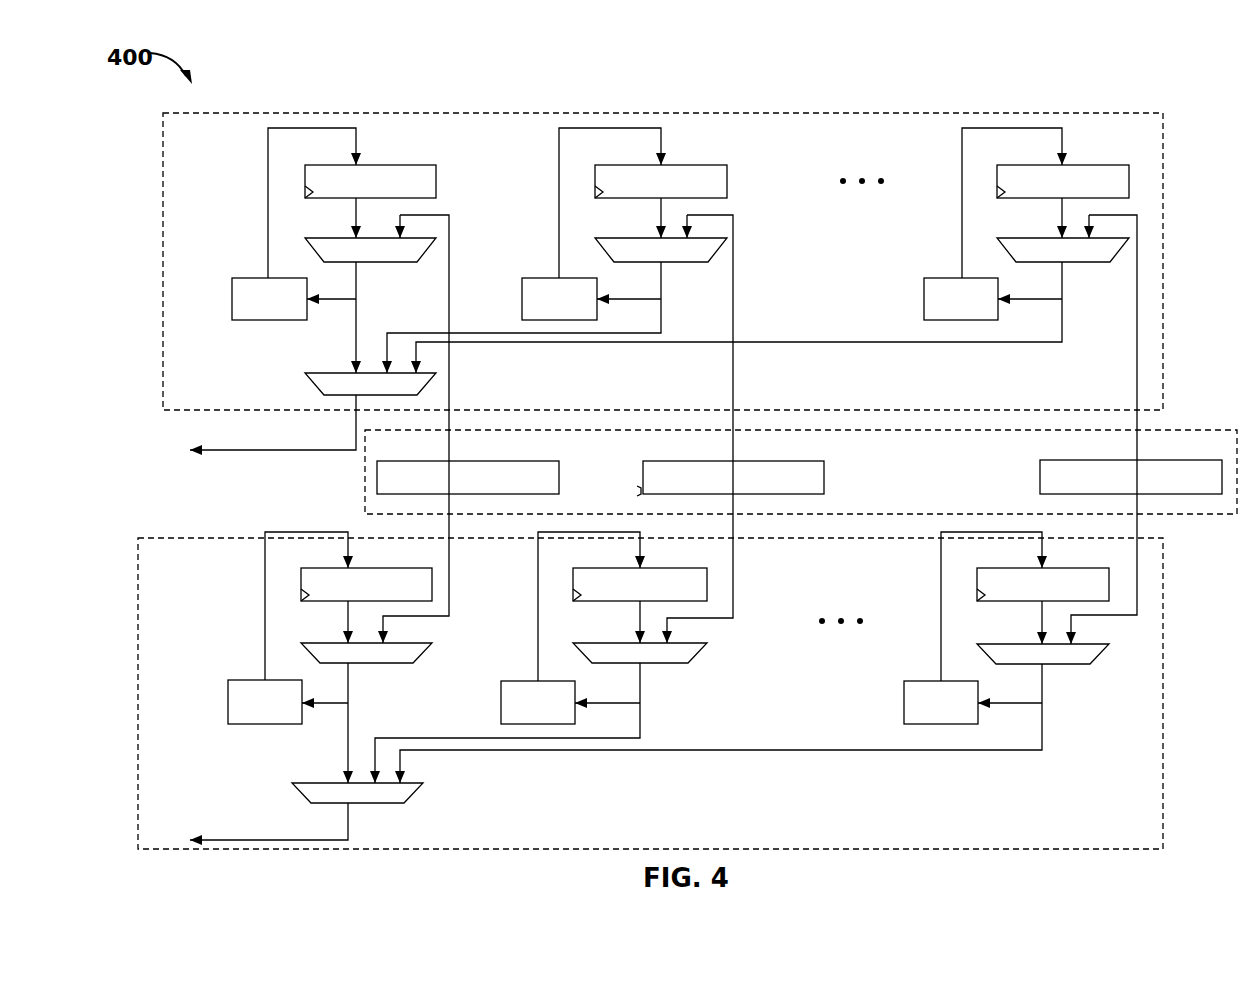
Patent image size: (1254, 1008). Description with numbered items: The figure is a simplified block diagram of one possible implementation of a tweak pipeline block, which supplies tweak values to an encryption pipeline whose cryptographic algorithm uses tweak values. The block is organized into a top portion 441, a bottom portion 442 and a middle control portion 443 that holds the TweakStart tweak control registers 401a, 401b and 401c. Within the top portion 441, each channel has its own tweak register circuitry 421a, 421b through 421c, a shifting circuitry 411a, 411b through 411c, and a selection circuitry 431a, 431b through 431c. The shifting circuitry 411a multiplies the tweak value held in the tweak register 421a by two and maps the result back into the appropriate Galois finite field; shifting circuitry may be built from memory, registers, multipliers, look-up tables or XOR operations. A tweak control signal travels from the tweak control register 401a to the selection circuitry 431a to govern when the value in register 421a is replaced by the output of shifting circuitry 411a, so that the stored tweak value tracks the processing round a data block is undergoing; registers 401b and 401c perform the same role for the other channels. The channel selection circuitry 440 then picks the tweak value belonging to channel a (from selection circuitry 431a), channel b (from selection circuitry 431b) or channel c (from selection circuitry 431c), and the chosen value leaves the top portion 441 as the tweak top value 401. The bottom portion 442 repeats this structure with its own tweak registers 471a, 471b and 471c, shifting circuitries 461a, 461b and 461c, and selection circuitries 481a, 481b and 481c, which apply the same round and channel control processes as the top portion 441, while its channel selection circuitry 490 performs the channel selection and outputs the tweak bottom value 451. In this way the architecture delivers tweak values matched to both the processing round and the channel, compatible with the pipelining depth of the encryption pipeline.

The top portion 441 is at (212, 153).
The bottom portion 442 is at (244, 569).
The control portion 443 is at (412, 455).
The tweak register circuitry 421a is at (400, 165).
The tweak register circuitry 421b is at (686, 165).
The tweak register circuitry 421c is at (1086, 165).
The shifting circuitry 411a is at (257, 278).
The shifting circuitry 411b is at (548, 278).
The shifting circuitry 411c is at (946, 278).
The selection circuitry 431a is at (395, 262).
The selection circuitry 431b is at (683, 262).
The selection circuitry 431c is at (1085, 262).
The channel selection circuitry 440 is at (346, 373).
The tweak top value 401 is at (178, 428).
The tweak control register 401a is at (487, 461).
The tweak control register 401b is at (752, 461).
The tweak control register 401c is at (1149, 460).
The tweak register circuitry 471a is at (370, 568).
The tweak register circuitry 471b is at (650, 568).
The tweak register circuitry 471c is at (1055, 568).
The shifting circuitry 461a is at (248, 680).
The shifting circuitry 461b is at (518, 681).
The shifting circuitry 461c is at (922, 681).
The selection circuitry 481a is at (365, 663).
The selection circuitry 481b is at (655, 663).
The selection circuitry 481c is at (1060, 664).
The channel selection circuitry 490 is at (375, 803).
The tweak bottom value 451 is at (247, 803).